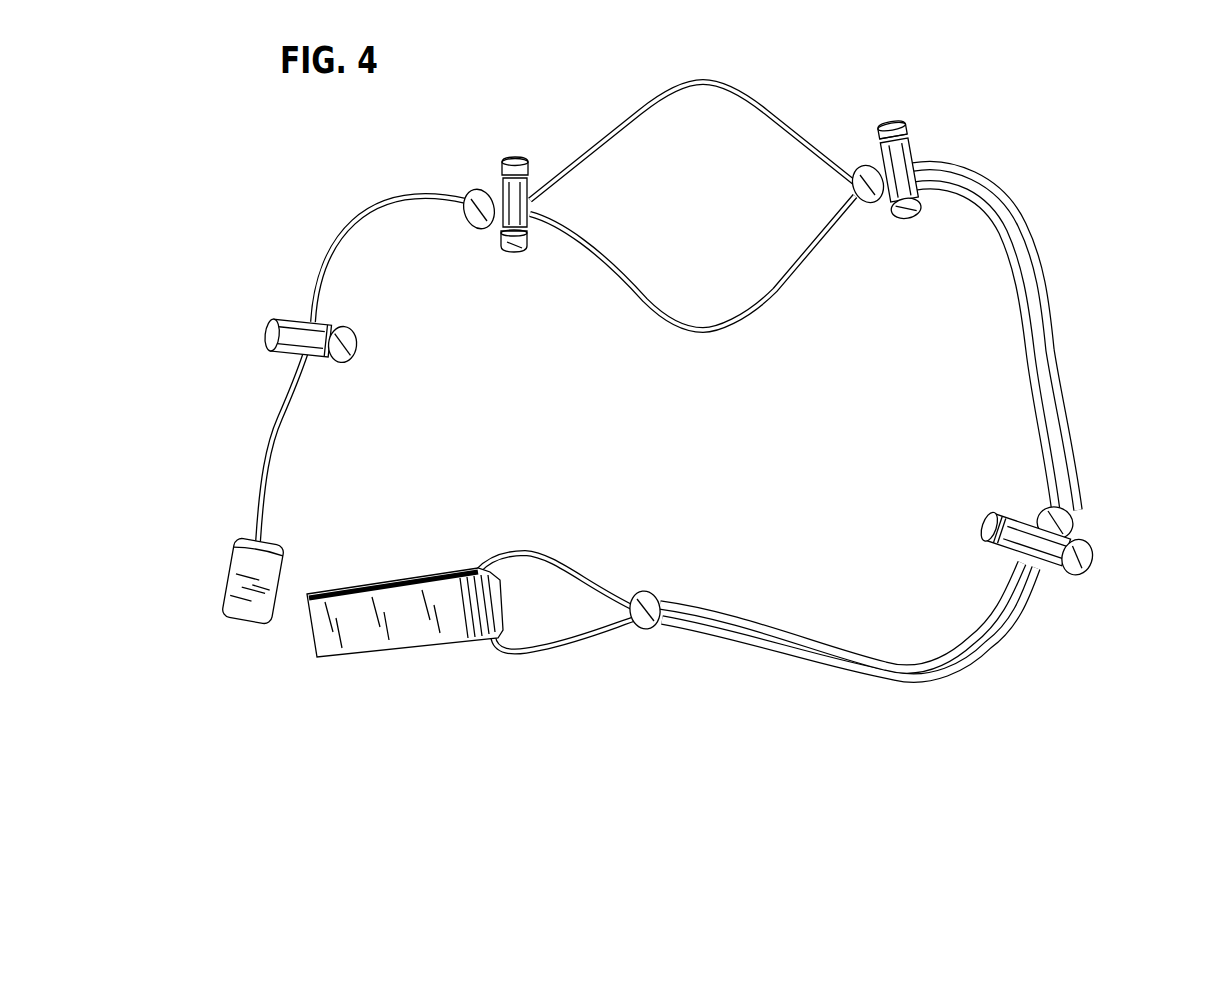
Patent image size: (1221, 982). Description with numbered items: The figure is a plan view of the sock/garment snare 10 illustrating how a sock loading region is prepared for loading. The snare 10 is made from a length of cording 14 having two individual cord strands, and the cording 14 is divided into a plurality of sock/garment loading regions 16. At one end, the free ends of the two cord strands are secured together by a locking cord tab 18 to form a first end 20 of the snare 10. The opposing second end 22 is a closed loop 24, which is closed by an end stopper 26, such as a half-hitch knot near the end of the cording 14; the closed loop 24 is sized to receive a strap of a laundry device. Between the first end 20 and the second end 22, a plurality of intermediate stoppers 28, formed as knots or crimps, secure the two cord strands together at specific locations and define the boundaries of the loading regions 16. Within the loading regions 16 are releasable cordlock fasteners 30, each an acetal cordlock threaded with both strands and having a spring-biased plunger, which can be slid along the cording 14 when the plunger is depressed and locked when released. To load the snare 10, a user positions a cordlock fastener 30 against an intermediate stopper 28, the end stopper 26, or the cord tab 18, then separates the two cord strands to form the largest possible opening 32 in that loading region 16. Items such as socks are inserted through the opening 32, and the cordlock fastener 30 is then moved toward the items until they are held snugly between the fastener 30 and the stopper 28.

The sock/garment snare 10 is at (236, 166).
The cording 14 is at (1023, 232).
The sock/garment loading regions 16 is at (226, 392).
The locking cord tab 18 is at (228, 569).
The first end 20 is at (312, 551).
The second end 22 is at (522, 686).
The closed loop 24 is at (540, 588).
The end stopper 26 is at (645, 632).
The intermediate stoppers 28 is at (467, 229).
The releasable cordlock fastener 30 is at (351, 351).
The opening 32 is at (700, 212).